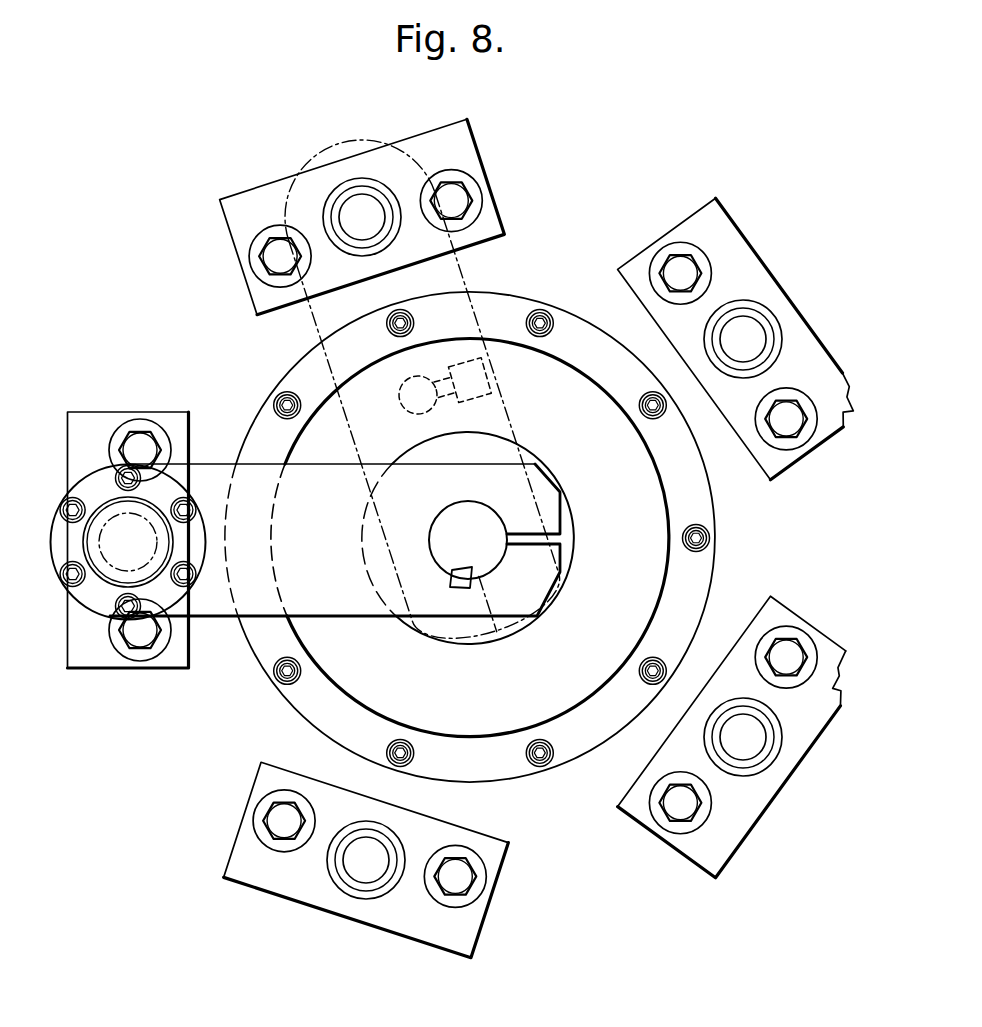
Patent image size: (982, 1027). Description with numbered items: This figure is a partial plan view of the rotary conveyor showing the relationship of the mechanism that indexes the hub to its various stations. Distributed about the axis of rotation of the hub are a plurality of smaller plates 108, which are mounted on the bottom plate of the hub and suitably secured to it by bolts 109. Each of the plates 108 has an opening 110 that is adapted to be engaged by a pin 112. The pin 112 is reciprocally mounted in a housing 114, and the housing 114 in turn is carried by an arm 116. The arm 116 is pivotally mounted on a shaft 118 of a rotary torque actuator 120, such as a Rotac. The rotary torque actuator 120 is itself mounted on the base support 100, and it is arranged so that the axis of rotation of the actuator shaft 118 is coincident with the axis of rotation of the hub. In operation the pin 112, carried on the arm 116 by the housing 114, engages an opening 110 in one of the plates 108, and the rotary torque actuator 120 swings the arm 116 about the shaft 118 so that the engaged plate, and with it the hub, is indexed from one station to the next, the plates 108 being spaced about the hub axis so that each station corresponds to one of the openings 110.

The base support 100 is at (275, 384).
The plates 108 is at (260, 187).
The bolts 109 is at (262, 260).
The opening 110 is at (351, 204).
The pin 112 is at (113, 513).
The housing 114 is at (184, 595).
The arm 116 is at (205, 463).
The shaft 118 is at (430, 522).
The rotary torque actuator 120 is at (400, 453).